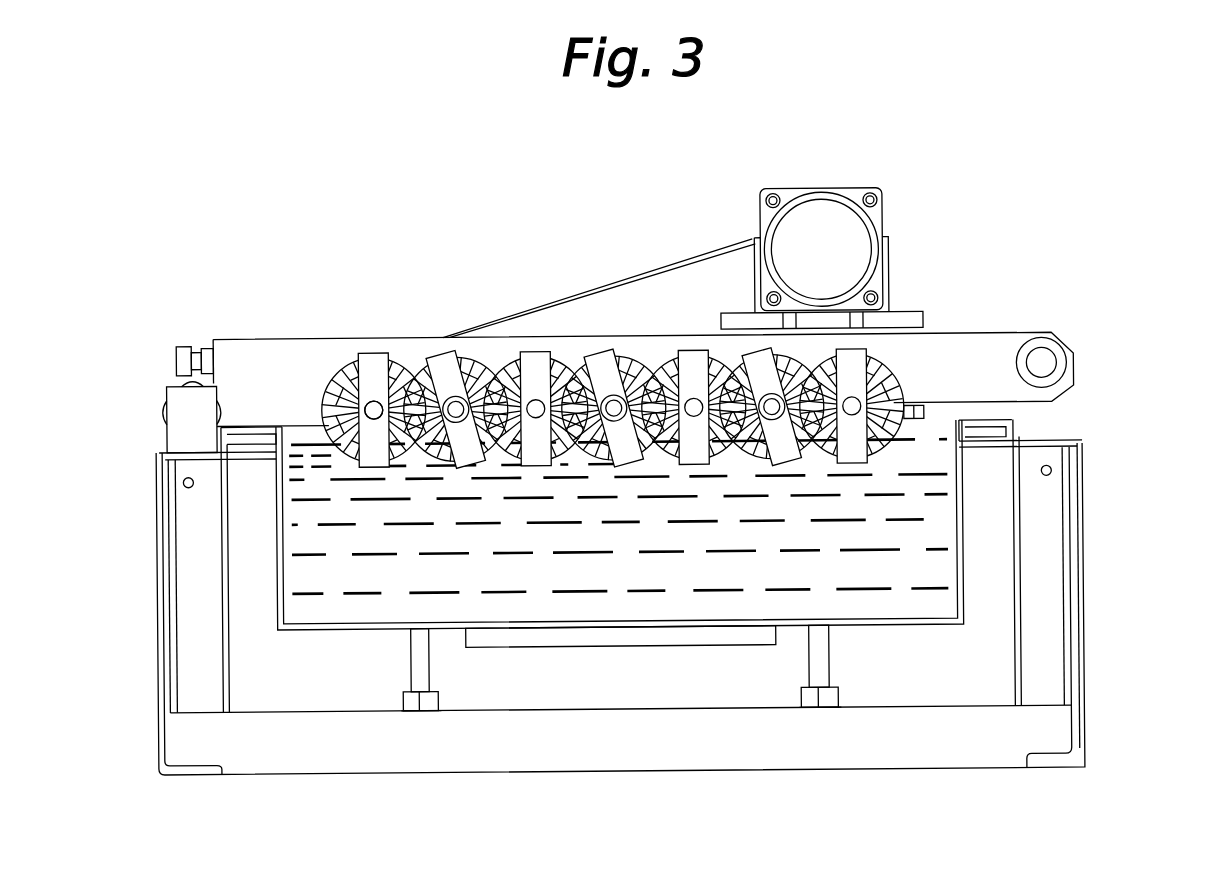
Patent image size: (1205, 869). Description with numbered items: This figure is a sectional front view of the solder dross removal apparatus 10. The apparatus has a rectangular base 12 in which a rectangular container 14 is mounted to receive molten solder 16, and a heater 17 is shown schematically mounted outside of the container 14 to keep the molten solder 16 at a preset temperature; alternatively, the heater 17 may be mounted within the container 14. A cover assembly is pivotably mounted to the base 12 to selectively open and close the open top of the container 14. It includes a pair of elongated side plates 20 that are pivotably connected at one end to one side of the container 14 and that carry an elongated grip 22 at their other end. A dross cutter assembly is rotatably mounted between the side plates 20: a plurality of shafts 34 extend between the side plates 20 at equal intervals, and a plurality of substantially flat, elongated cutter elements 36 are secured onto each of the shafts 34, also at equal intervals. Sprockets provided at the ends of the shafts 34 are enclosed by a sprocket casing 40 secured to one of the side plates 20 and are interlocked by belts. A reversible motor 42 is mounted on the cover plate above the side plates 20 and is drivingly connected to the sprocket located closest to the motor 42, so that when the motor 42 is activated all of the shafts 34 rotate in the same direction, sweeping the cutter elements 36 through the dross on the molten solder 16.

The solder dross removal apparatus 10 is at (556, 229).
The rectangular base 12 is at (1083, 548).
The rectangular container 14 is at (963, 601).
The molten solder 16 is at (302, 570).
The heater 17 is at (543, 650).
The side plates 20 is at (975, 347).
The grip 22 is at (1060, 343).
The shafts 34 is at (378, 399).
The cutter elements 36 is at (345, 368).
The sprocket casing 40 is at (698, 253).
The reversible motor 42 is at (855, 247).